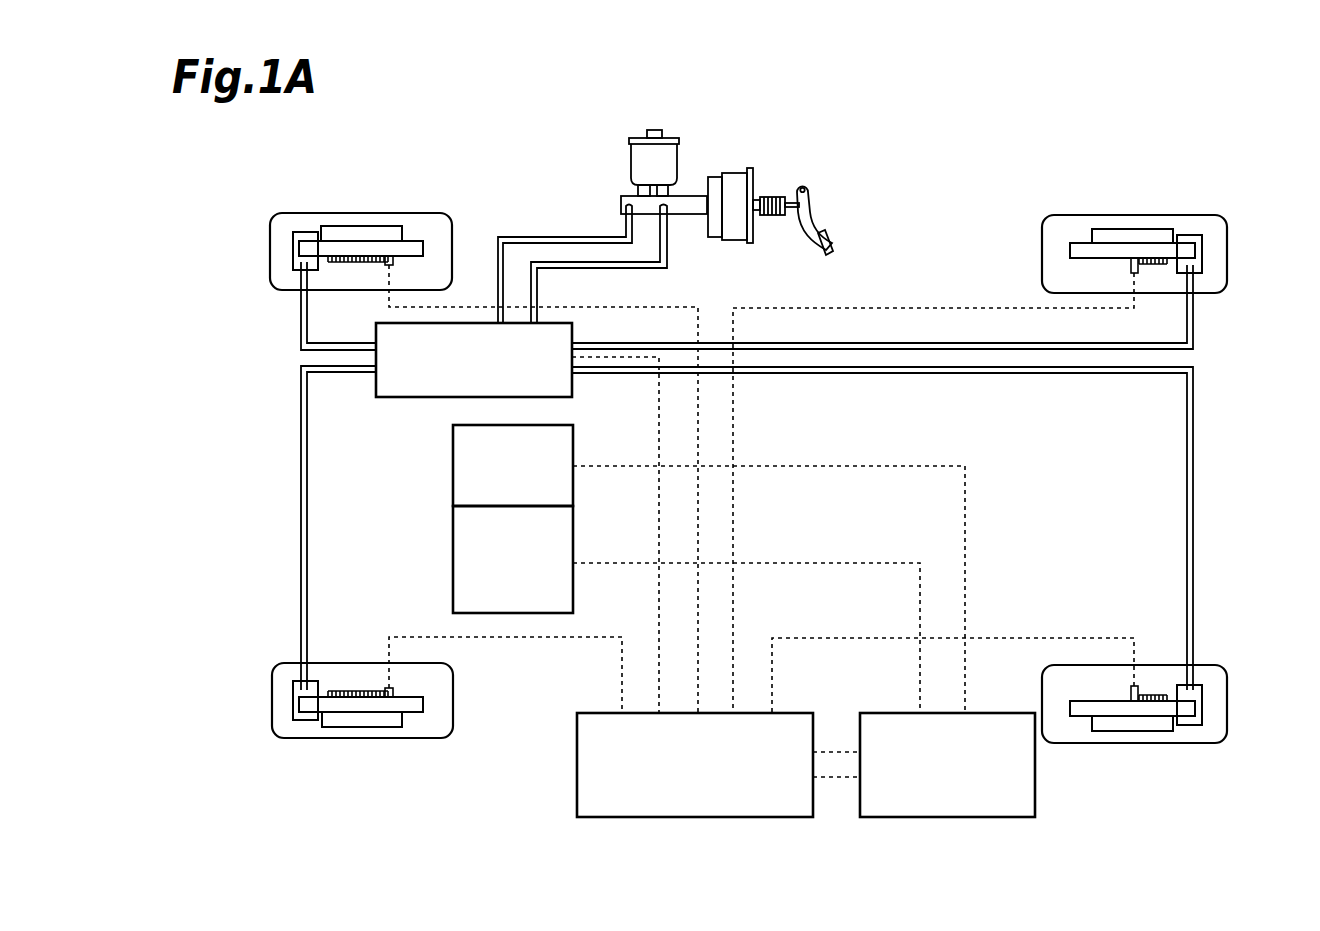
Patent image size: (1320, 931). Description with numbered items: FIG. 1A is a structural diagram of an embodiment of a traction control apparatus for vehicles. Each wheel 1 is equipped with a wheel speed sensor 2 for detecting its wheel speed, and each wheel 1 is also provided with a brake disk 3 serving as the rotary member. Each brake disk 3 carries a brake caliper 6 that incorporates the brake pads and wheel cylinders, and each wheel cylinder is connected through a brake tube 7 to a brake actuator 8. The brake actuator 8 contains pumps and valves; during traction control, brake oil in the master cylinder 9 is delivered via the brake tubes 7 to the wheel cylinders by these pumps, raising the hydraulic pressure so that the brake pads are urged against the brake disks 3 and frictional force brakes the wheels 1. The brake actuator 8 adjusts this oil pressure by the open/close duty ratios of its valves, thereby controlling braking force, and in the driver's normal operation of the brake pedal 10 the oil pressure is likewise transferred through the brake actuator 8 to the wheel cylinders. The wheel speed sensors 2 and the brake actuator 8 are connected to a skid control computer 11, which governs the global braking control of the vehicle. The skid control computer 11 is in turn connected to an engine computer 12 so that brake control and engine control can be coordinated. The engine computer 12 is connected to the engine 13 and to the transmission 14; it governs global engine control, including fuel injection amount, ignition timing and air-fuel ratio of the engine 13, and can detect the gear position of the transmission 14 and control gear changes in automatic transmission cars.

The wheel 1 is at (349, 213).
The wheel speed sensor 2 is at (413, 258).
The brake disk 3 is at (410, 240).
The brake caliper 6 is at (293, 240).
The brake tube 7 is at (915, 371).
The brake actuator 8 is at (418, 398).
The master cylinder 9 is at (620, 208).
The brake pedal 10 is at (833, 245).
The skid control computer 11 is at (577, 777).
The engine computer 12 is at (1035, 797).
The engine 13 is at (573, 450).
The transmission 14 is at (573, 543).